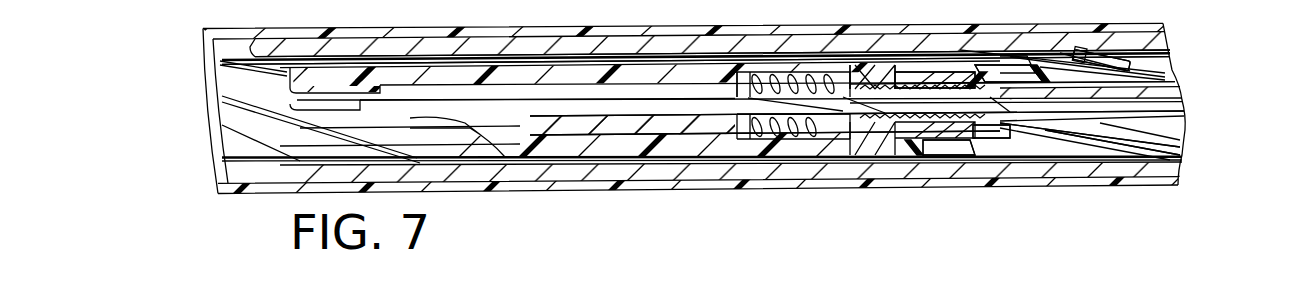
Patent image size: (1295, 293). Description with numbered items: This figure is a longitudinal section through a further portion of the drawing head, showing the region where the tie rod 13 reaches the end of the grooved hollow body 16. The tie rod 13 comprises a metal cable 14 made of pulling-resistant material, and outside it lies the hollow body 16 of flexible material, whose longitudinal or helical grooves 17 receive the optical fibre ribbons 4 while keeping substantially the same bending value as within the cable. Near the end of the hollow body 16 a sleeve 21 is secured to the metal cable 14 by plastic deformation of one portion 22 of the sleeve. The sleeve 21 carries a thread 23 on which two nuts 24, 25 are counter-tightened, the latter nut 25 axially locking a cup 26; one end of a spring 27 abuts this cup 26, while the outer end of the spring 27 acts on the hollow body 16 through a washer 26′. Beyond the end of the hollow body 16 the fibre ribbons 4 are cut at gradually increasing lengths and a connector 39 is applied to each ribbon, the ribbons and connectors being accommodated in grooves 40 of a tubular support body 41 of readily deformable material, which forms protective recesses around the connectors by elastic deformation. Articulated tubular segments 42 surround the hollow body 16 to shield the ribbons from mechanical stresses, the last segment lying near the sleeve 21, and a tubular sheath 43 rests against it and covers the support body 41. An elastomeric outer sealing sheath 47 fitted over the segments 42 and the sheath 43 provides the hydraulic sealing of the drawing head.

The optical fibre ribbons 4 is at (441, 55).
The tie rod 13 is at (580, 96).
The metal cable 14 is at (1165, 99).
The hollow body 16 is at (686, 150).
The grooves 17 is at (243, 115).
The sleeve 21 is at (1168, 82).
The portion 22 is at (1170, 129).
The thread 23 is at (927, 82).
The nut 24 is at (906, 136).
The nut 25 is at (956, 75).
The cup 26 is at (873, 70).
The washer 26′ is at (735, 76).
The spring 27 is at (800, 130).
The connector 39 is at (1102, 62).
The grooves 40 is at (1165, 138).
The tubular support body 41 is at (1036, 140).
The tubular segments 42 is at (366, 40).
The tubular sheath 43 is at (1170, 174).
The outer sealing sheath 47 is at (533, 26).